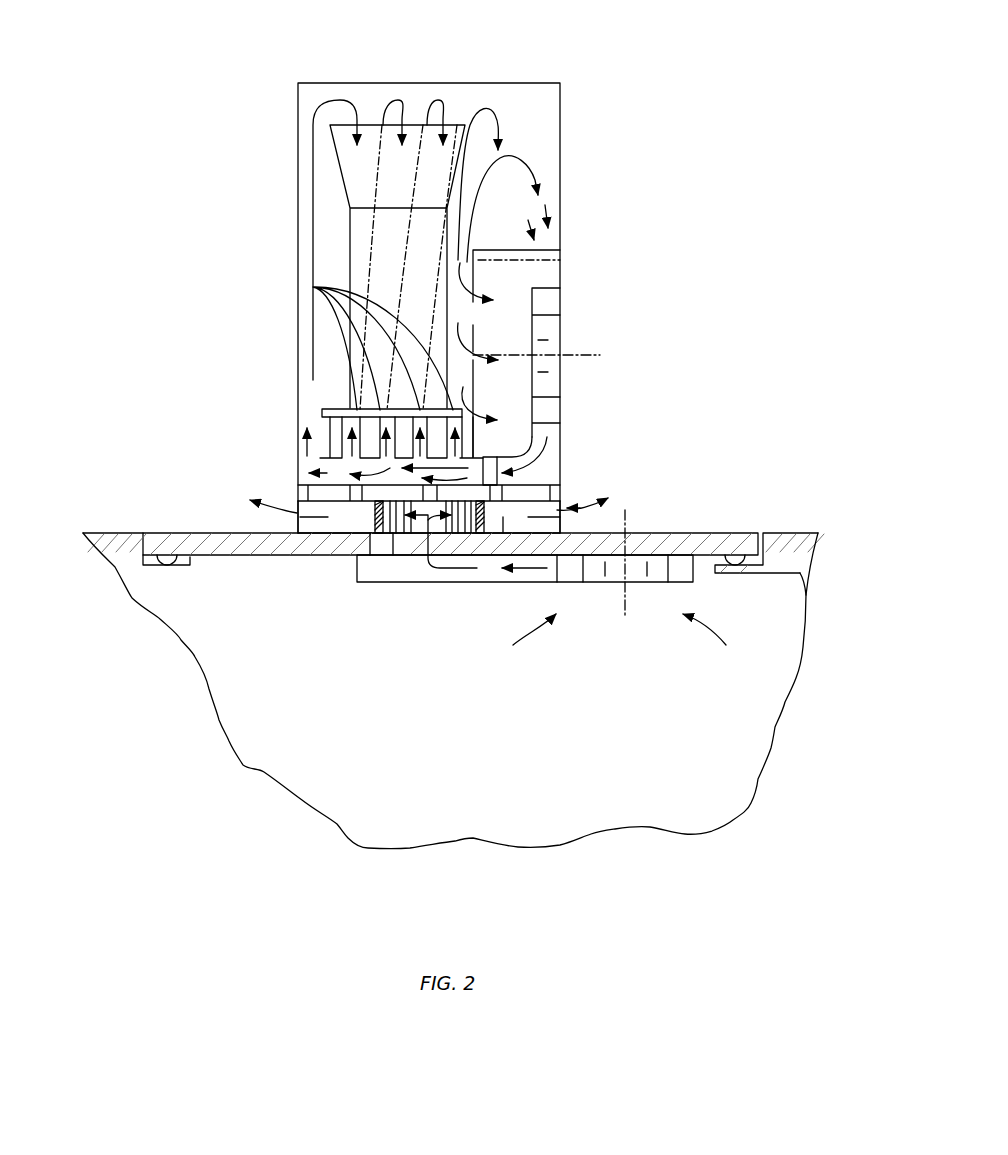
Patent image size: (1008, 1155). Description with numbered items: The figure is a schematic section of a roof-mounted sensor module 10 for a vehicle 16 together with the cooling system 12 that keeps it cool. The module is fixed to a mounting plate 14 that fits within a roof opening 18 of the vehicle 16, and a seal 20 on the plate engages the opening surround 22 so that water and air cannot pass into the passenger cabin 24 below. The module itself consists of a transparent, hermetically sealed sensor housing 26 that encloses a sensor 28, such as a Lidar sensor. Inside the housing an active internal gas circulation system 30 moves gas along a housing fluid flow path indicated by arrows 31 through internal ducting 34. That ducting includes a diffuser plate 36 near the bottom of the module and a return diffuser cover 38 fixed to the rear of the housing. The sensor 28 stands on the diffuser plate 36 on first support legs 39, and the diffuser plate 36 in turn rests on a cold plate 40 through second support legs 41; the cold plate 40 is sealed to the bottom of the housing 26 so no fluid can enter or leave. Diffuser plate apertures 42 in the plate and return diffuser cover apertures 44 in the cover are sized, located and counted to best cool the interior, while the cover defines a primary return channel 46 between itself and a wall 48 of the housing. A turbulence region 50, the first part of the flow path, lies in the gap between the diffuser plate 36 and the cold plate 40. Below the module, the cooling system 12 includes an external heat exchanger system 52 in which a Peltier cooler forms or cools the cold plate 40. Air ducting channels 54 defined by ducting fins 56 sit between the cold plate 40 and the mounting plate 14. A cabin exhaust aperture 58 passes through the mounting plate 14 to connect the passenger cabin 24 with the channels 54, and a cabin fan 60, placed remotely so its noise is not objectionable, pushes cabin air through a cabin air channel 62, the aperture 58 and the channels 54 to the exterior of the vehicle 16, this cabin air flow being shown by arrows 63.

The sensor module 10 is at (684, 262).
The cooling system 12 is at (583, 500).
The mounting plate 14 is at (717, 533).
The vehicle 16 is at (797, 533).
The roof opening 18 is at (190, 570).
The seal 20 is at (180, 560).
The pit 22 is at (167, 572).
The passenger cabin 24 is at (508, 747).
The sensor housing 26 is at (562, 123).
The sensor 28 is at (350, 255).
The active internal gas circulation system 30 is at (540, 303).
The housing fluid flow path arrows 31 is at (490, 108).
The internal ducting 34 is at (532, 437).
The diffuser plate 36 is at (322, 455).
The return diffuser cover 38 is at (548, 258).
The first support legs 39 is at (327, 422).
The cold plate 40 is at (541, 484).
The second support legs 41 is at (507, 482).
The diffuser plate apertures 42 is at (313, 287).
The return diffuser cover apertures 44 is at (490, 350).
The primary return channel 46 is at (538, 253).
The wall 48 is at (562, 272).
The turbulence region 50 is at (312, 485).
The external heat exchanger system 52 is at (295, 507).
The air ducting channels 54 is at (474, 540).
The ducting fins 56 is at (372, 535).
The cabin exhaust aperture 58 is at (371, 560).
The cabin fan 60 is at (648, 582).
The cabin air channel 62 is at (537, 582).
The cabin air flow arrows 63 is at (300, 533).